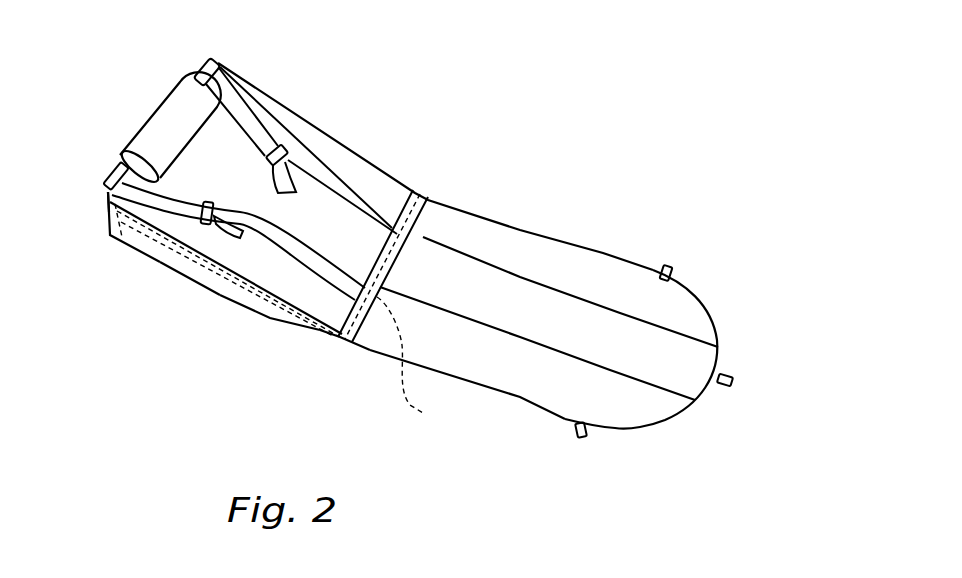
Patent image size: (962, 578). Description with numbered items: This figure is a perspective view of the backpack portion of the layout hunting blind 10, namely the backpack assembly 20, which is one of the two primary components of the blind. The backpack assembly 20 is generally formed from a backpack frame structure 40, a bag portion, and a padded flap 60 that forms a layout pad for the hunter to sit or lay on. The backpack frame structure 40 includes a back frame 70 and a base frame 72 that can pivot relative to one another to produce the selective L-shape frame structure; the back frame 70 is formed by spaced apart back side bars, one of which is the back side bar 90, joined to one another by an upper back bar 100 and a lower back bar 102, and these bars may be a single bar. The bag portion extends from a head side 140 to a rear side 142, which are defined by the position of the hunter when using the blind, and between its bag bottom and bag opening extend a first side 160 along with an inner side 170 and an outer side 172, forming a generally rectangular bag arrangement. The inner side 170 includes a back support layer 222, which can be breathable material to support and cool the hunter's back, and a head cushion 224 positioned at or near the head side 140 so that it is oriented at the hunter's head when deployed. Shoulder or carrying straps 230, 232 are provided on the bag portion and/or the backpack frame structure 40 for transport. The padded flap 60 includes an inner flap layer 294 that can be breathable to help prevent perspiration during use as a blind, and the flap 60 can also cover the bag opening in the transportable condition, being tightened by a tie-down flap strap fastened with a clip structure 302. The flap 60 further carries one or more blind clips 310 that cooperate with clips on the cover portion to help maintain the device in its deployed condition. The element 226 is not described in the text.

The layout hunting blind 10 is at (546, 133).
The backpack assembly 20 is at (416, 150).
The backpack frame structure 40 is at (280, 324).
The padded flap 60 is at (606, 233).
The back frame 70 is at (207, 281).
The base frame 72 is at (97, 237).
The back side bar 90 is at (168, 243).
The upper back bar 100 is at (419, 362).
The lower back bar 102 is at (108, 208).
The head side 140 is at (196, 62).
The rear side 142 is at (318, 335).
The first side 160 is at (187, 268).
The inner side 170 is at (208, 157).
The outer side 172 is at (230, 305).
The back support layer 222 is at (238, 182).
The head cushion 224 is at (163, 120).
The outer cover 226 is at (720, 256).
The shoulder strap 230 is at (113, 180).
The shoulder strap 232 is at (234, 88).
The inner flap layer 294 is at (653, 347).
The clip structure 302 is at (725, 387).
The blind clip 310 is at (664, 267).